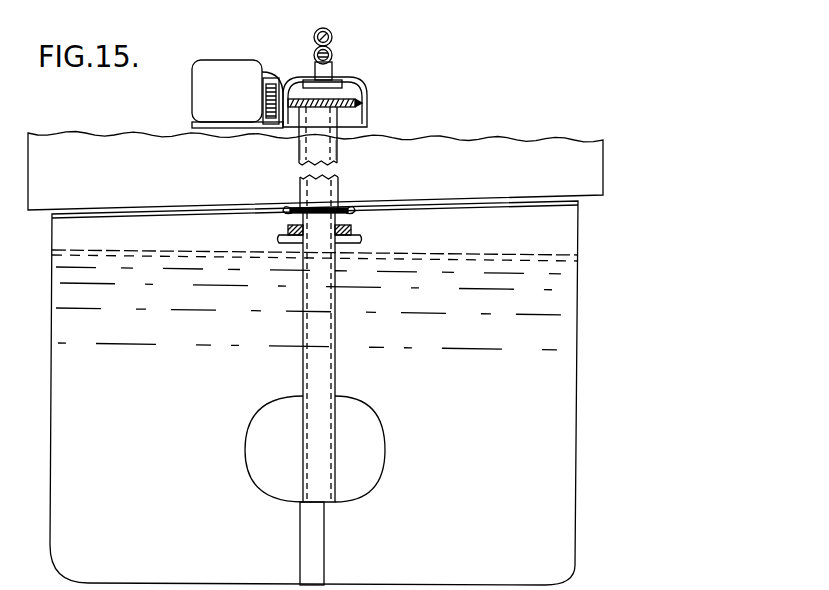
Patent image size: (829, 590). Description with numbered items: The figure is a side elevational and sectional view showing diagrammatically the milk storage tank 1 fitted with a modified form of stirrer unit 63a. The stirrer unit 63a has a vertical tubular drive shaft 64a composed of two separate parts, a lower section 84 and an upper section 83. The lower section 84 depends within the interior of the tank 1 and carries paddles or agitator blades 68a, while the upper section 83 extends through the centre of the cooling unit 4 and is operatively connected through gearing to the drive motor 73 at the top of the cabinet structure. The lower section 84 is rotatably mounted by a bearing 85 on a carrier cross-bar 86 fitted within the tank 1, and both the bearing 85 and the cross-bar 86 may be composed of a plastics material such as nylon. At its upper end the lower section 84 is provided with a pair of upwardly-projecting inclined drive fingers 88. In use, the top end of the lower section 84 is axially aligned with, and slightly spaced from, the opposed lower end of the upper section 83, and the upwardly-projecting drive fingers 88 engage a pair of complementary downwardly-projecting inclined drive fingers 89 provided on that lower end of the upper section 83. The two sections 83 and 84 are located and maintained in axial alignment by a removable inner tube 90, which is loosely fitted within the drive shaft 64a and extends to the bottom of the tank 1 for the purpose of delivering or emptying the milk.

The milk storage tank 1 is at (62, 398).
The cooling unit 4 is at (99, 158).
The drive motor 73 is at (203, 86).
The stirrer unit 63a is at (368, 95).
The upper section 83 is at (300, 188).
The vertical tubular drive shaft 64a is at (325, 193).
The downwardly-projecting inclined drive fingers 89 is at (293, 207).
The upwardly-projecting inclined drive fingers 88 is at (289, 230).
The bearing 85 is at (288, 239).
The cross-bar 86 is at (358, 240).
The lower section 84 is at (298, 379).
The paddles or agitator blades 68a is at (262, 458).
The removable inner tube 90 is at (312, 553).